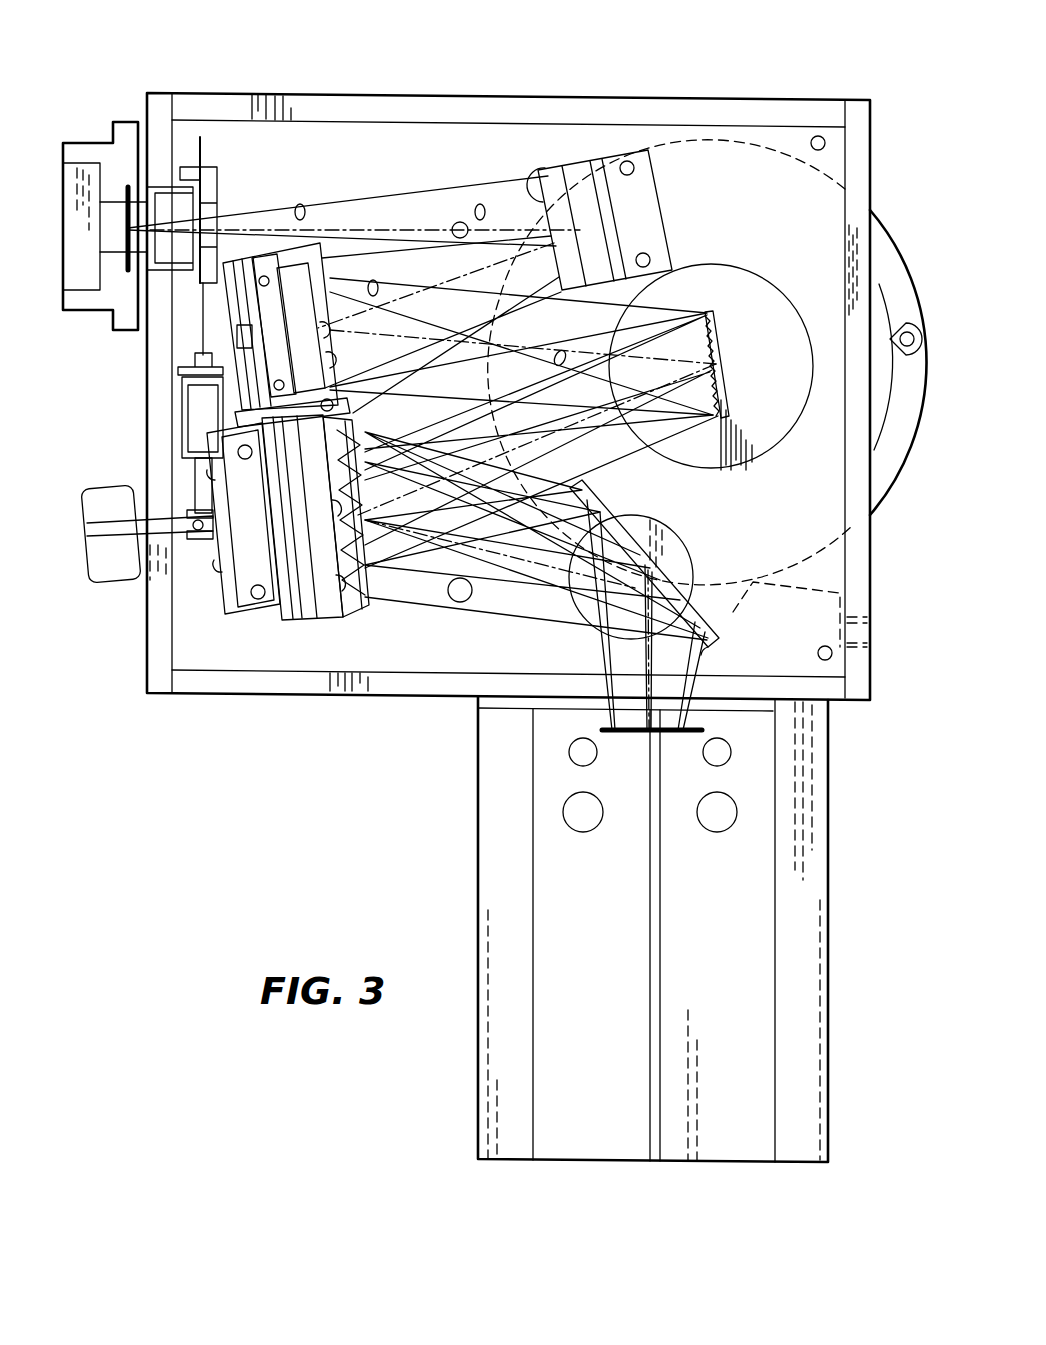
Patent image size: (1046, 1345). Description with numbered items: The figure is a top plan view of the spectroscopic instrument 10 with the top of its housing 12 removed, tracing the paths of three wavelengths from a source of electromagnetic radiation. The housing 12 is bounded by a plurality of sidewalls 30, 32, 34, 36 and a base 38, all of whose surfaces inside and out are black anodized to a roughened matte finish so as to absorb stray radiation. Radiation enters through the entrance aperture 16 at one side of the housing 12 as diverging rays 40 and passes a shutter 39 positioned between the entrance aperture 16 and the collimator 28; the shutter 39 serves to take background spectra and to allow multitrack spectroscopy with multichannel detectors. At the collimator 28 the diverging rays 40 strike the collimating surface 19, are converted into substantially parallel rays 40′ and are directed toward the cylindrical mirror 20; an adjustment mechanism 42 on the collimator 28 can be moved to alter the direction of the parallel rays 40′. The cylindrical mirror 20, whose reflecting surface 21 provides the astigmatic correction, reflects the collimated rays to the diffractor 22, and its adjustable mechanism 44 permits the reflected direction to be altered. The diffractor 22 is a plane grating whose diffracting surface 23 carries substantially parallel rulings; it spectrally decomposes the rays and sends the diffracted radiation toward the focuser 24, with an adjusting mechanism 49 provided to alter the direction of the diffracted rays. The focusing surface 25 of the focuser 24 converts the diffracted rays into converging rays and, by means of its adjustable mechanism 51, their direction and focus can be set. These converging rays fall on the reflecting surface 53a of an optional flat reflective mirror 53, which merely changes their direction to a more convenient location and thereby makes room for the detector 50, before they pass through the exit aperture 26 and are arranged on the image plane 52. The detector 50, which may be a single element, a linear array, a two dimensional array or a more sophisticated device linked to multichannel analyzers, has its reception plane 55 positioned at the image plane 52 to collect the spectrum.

The spectroscopic instrument 10 is at (486, 84).
The housing 12 is at (687, 97).
The entrance aperture 16 is at (121, 220).
The collimating surface 19 is at (524, 180).
The cylindrical mirror 20 is at (228, 306).
The reflecting surface 21 is at (335, 355).
The diffractor 22 is at (722, 322).
The diffracting surface 23 is at (727, 378).
The focuser 24 is at (223, 597).
The focusing surface 25 is at (352, 603).
The exit aperture 26 is at (574, 660).
The collimating mirror 28 is at (663, 181).
The sidewall 30 is at (763, 98).
The sidewall 32 is at (870, 155).
The sidewall 34 is at (250, 696).
The sidewall 36 is at (148, 652).
The base 38 is at (425, 669).
The shutter 39 is at (203, 150).
The diverging rays 40 is at (298, 205).
The parallel rays 40′ is at (477, 205).
The adjustment mechanism 42 is at (660, 153).
The adjustable mechanism 44 is at (222, 333).
The adjusting mechanism 49 is at (884, 483).
The detector 50 is at (828, 772).
The adjustable mechanism 51 is at (197, 483).
The image plane 52 is at (630, 733).
The flat reflective mirror 53 is at (602, 498).
The reflecting surface 53a is at (693, 647).
The reception plane 55 is at (687, 724).